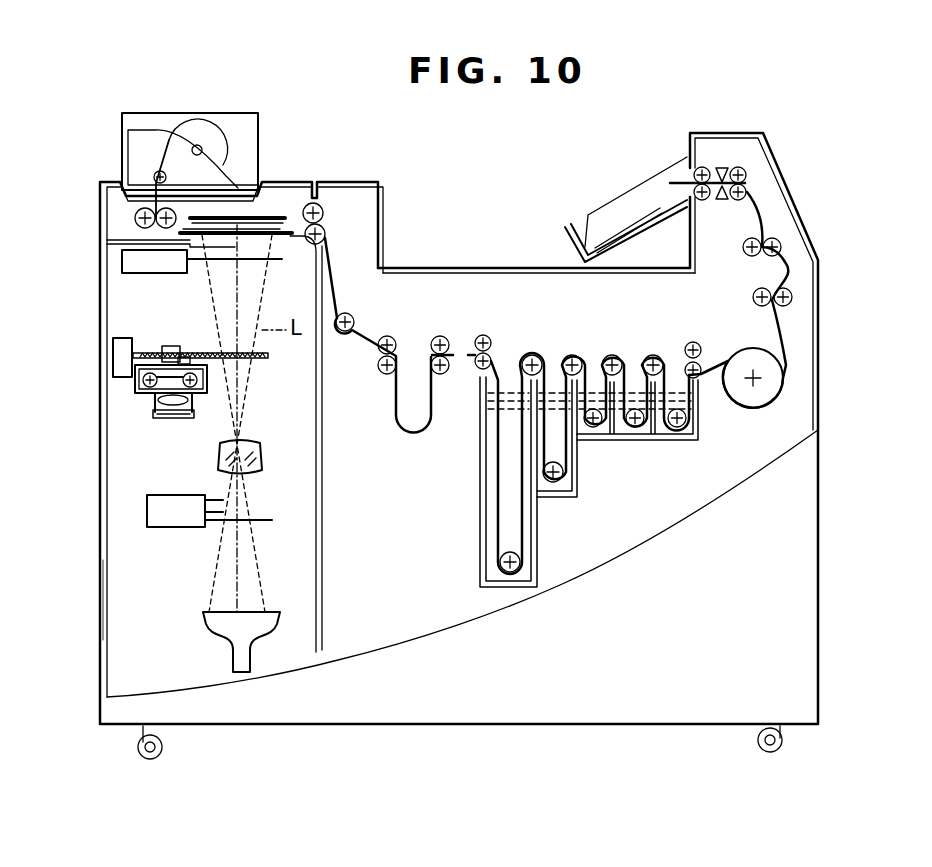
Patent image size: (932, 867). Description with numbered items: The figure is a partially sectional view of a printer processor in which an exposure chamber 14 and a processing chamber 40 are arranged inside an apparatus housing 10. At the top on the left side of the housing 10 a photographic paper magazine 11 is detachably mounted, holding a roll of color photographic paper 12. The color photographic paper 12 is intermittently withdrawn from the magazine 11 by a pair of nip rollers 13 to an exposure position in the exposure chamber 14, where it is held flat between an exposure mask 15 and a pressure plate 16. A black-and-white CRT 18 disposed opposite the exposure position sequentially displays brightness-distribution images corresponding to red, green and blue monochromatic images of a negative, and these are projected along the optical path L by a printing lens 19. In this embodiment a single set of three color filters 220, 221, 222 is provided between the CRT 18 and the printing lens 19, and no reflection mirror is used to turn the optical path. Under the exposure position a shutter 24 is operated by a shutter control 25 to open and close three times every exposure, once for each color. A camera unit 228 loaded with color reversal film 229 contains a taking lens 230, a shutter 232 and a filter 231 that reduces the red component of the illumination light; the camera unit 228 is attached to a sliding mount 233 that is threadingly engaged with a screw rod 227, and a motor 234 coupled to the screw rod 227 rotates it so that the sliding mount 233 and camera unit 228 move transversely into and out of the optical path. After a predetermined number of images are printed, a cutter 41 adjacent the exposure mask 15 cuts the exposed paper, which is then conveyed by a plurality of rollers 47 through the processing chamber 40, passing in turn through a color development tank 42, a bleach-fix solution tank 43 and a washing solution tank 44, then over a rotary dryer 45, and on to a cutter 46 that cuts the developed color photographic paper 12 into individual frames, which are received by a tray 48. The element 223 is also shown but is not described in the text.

The apparatus housing 10 is at (830, 540).
The photographic paper magazine 11 is at (215, 112).
The color photographic paper 12 is at (156, 170).
The nip rollers 13 is at (135, 217).
The exposure chamber 14 is at (127, 597).
The exposure mask 15 is at (287, 229).
The pressure plate 16 is at (262, 214).
The CRT 18 is at (230, 640).
The printing lens 19 is at (263, 457).
The shutter 24 is at (280, 262).
The shutter control 25 is at (130, 263).
The processing chamber 40 is at (493, 280).
The cutter 41 is at (309, 196).
The color development tank 42 is at (532, 548).
The bleach-fix solution tank 43 is at (577, 490).
The washing solution tank 44 is at (693, 446).
The rotary dryer 45 is at (753, 401).
The cutter 46 is at (722, 165).
The rollers 47 is at (388, 335).
The tray 48 is at (660, 185).
The color filter 220 is at (269, 524).
The color filter 221 is at (221, 516).
The color filter 222 is at (215, 498).
The shutter drive 223 is at (170, 528).
The screw rod 227 is at (264, 360).
The camera unit 228 is at (132, 390).
The color reversal film 229 is at (186, 357).
The taking lens 230 is at (178, 418).
The filter 231 is at (160, 420).
The shutter 232 is at (194, 400).
The sliding mount 233 is at (170, 345).
The motor 234 is at (113, 358).